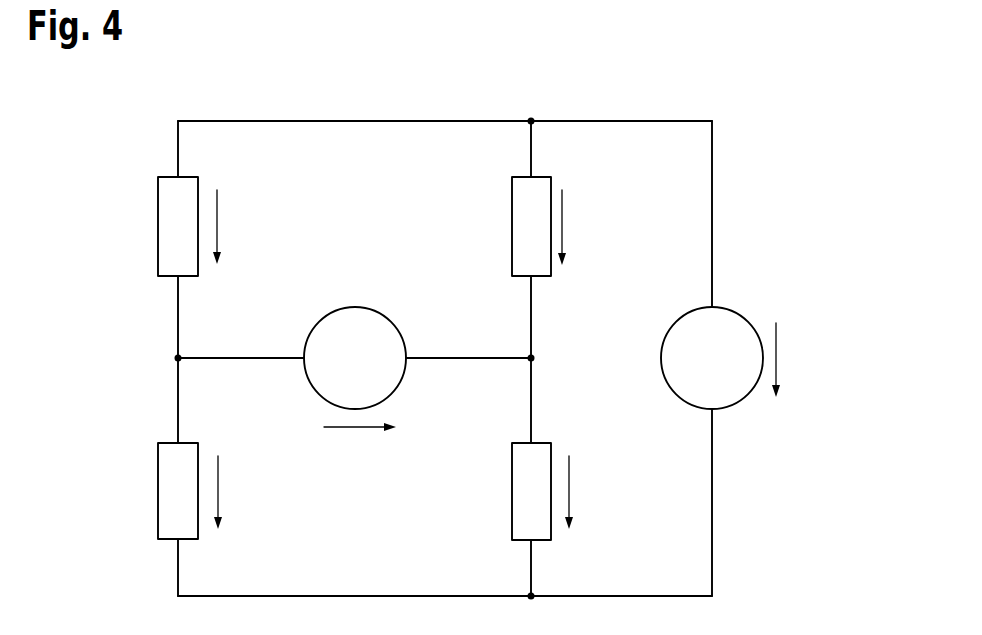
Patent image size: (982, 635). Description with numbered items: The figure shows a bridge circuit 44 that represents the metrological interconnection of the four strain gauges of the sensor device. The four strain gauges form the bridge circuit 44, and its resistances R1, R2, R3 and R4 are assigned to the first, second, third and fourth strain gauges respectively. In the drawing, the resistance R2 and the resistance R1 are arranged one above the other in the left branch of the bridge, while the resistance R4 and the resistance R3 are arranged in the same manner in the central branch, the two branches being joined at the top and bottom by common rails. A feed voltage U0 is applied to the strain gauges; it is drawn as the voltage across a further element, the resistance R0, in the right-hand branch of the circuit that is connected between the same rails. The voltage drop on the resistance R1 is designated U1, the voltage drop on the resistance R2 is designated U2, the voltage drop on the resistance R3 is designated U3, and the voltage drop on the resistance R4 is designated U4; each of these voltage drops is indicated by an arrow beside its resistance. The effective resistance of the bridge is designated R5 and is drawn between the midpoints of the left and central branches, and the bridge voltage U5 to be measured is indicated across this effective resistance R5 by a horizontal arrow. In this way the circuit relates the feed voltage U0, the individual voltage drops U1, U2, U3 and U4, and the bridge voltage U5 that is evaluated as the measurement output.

The bridge circuit 44 is at (784, 108).
The resistance R1 is at (158, 468).
The resistance R2 is at (158, 206).
The resistance R3 is at (512, 469).
The resistance R4 is at (512, 206).
The effective resistance of the bridge R5 is at (327, 311).
The resistance R0 is at (685, 311).
The feed voltage U0 is at (777, 330).
The voltage drop U1 is at (219, 459).
The voltage drop U2 is at (218, 196).
The voltage drop U3 is at (570, 460).
The voltage drop U4 is at (563, 196).
The bridge voltage U5 is at (352, 428).